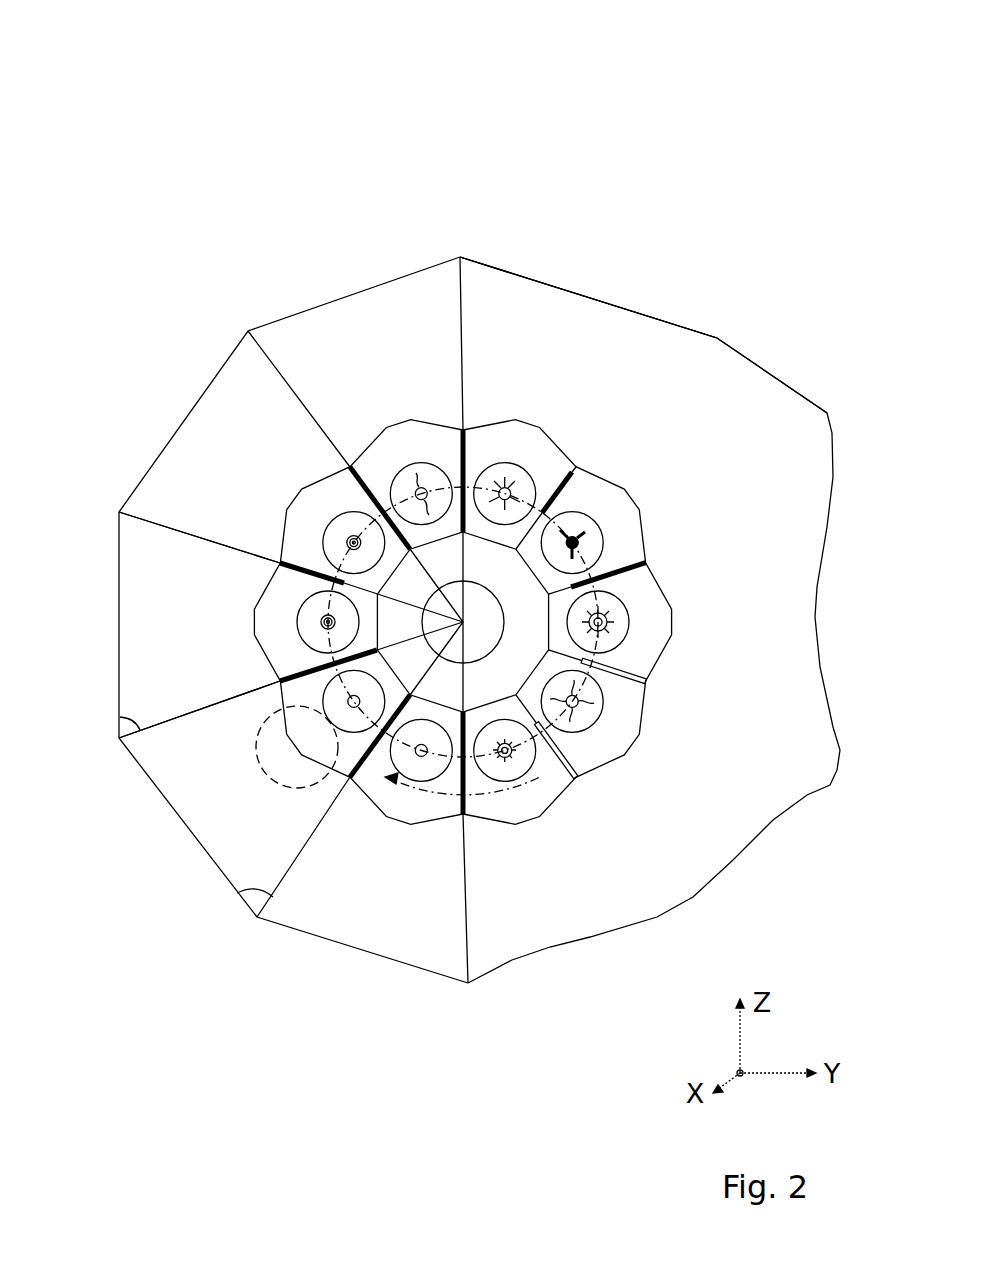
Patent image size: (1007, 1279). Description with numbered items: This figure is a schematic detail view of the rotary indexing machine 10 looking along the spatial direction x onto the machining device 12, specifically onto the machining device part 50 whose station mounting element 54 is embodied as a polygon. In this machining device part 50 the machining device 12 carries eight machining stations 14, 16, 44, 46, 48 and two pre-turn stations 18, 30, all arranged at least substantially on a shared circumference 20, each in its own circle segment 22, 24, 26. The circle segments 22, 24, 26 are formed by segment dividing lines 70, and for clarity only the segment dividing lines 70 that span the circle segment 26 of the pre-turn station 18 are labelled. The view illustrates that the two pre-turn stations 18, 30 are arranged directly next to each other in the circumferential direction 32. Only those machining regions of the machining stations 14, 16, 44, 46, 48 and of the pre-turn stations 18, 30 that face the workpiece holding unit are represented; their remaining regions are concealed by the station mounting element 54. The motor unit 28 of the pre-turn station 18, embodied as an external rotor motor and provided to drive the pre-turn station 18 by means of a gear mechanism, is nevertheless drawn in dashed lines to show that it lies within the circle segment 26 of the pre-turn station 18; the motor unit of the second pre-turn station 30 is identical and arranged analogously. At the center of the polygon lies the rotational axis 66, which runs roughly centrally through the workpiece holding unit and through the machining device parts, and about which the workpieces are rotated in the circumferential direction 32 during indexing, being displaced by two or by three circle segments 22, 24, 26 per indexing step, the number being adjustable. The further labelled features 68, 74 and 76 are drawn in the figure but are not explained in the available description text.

The rotary indexing machine 10 is at (473, 500).
The machining device 12 is at (763, 115).
The machining station 14 is at (313, 623).
The machining station 16 is at (321, 542).
The pre-turn station 18 is at (326, 839).
The shared circumference 20 is at (623, 580).
The circle segment 22 is at (223, 412).
The circle segment 24 is at (165, 630).
The circle segment 26 is at (203, 797).
The motor unit 28 is at (255, 747).
The second pre-turn station 30 is at (370, 783).
The circumferential direction 32 is at (487, 795).
The machining station 44 is at (403, 485).
The machining station 46 is at (513, 472).
The machining station 48 is at (583, 522).
The machining device part 50 is at (649, 181).
The station mounting element 54 is at (613, 348).
The rotational axis 66 is at (477, 635).
The spacer bar 68 is at (590, 662).
The segment dividing line 70 is at (120, 717).
The tool housing ring 74 is at (310, 695).
The tool 76 is at (342, 767).